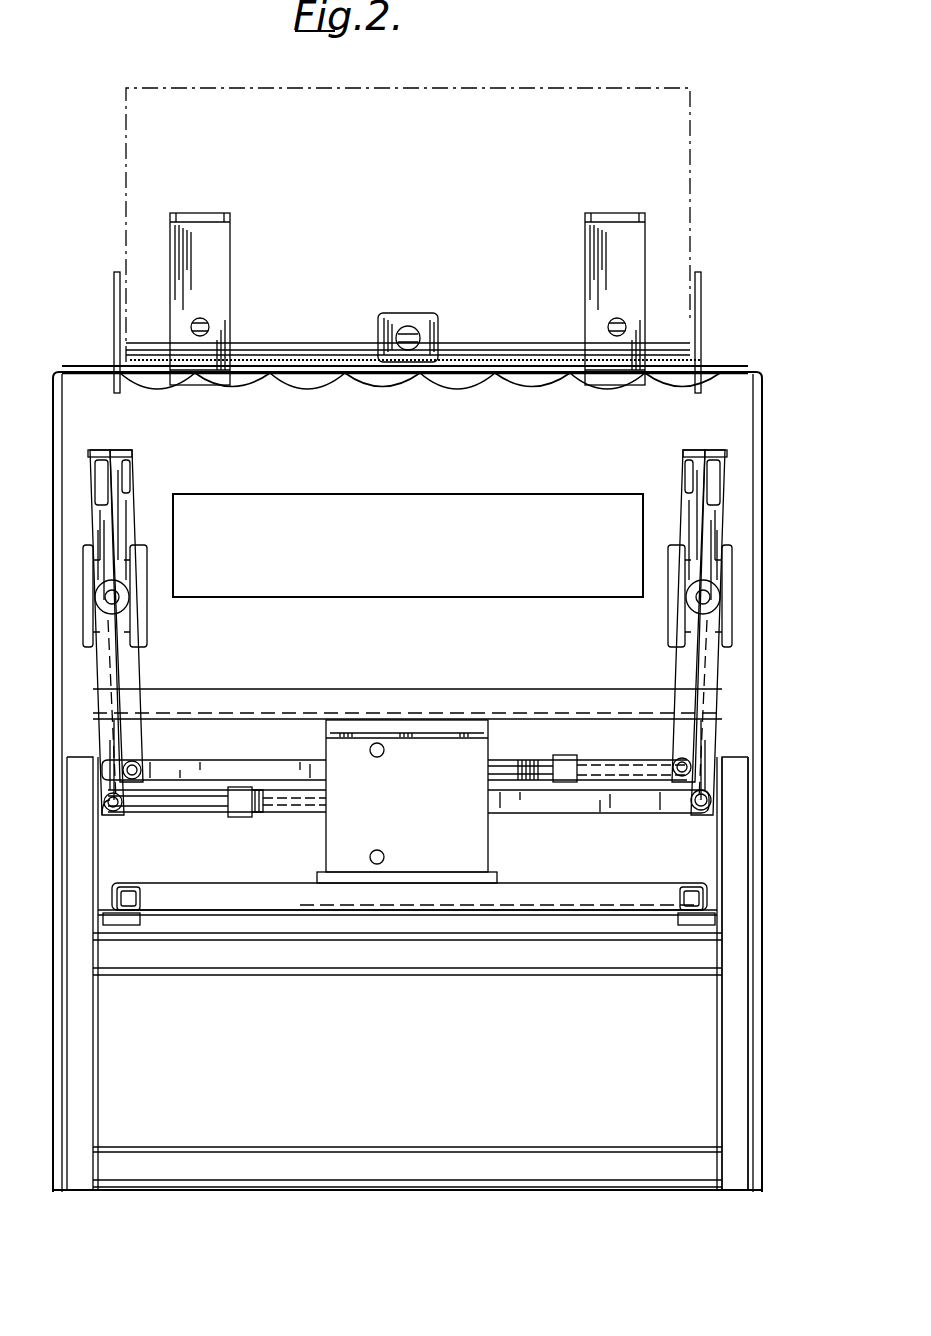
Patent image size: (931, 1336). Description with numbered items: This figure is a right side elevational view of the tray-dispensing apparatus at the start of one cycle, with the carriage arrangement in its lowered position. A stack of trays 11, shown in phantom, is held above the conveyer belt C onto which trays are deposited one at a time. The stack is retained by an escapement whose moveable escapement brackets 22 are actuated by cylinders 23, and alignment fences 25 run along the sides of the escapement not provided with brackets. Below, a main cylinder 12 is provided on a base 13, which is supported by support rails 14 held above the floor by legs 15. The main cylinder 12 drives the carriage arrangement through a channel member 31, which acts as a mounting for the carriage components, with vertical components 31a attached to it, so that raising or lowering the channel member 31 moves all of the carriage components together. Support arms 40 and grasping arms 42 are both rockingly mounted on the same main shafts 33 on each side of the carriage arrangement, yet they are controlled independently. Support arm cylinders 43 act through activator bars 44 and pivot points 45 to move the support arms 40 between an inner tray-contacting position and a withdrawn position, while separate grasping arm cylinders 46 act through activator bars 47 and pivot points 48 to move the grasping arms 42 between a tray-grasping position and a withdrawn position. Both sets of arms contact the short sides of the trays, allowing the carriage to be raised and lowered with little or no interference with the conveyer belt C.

The tray stack 11 is at (660, 187).
The moveable escapement brackets 22 is at (632, 247).
The cylinders 23 is at (620, 325).
The alignment fences 25 is at (707, 307).
The conveyer belt C is at (535, 508).
The channel member 31 is at (577, 703).
The vertical components 31a is at (715, 668).
The main shafts 33 is at (112, 597).
The support arms 40 is at (133, 460).
The grasping arms 42 is at (92, 478).
The support arm cylinders 43 is at (183, 803).
The activator bars 44 is at (618, 798).
The pivot points 45 is at (113, 802).
The grasping arm cylinders 46 is at (642, 745).
The activator bars 47 is at (297, 768).
The pivot points 48 is at (132, 770).
The main cylinder 12 is at (457, 852).
The base 13 is at (283, 900).
The support rails 14 is at (127, 928).
The legs 15 is at (735, 997).